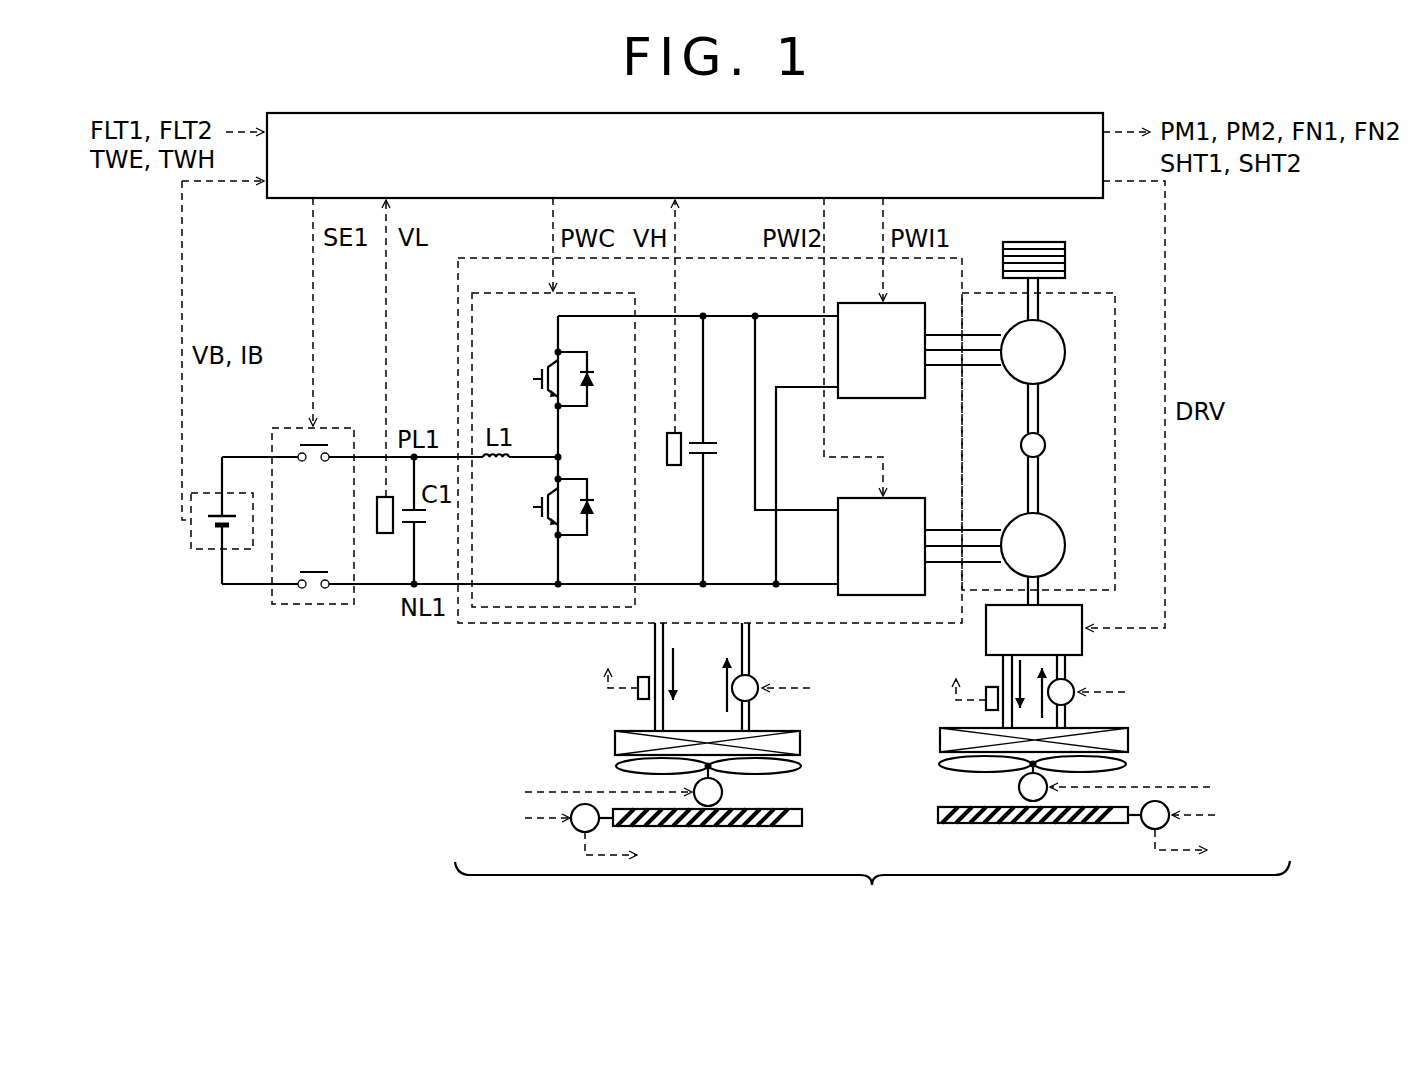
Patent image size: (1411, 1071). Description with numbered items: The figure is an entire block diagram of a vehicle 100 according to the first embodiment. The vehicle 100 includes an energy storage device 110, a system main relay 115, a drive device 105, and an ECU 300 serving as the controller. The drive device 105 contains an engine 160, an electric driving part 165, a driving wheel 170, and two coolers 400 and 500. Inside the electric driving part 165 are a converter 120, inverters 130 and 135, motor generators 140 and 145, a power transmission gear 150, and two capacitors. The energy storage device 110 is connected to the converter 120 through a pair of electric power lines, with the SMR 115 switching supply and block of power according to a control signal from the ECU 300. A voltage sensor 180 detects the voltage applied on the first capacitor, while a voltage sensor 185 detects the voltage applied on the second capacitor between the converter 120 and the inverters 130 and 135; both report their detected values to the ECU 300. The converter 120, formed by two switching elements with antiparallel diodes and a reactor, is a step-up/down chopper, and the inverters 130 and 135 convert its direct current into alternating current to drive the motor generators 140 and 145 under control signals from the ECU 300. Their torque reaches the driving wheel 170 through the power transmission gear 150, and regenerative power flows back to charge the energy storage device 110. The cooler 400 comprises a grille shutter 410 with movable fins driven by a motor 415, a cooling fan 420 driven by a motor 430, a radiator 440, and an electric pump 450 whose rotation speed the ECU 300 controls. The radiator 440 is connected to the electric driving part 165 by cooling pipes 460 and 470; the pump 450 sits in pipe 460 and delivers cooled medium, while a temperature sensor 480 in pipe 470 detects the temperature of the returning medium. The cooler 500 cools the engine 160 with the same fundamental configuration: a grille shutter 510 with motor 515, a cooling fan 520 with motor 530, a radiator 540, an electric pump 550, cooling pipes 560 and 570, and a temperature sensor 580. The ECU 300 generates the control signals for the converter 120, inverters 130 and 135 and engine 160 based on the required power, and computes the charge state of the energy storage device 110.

The vehicle 100 is at (1306, 250).
The drive device 105 is at (872, 887).
The energy storage device 110 is at (203, 550).
The system main relay 115 is at (341, 428).
The converter 120 is at (594, 293).
The inverter 130 is at (893, 303).
The inverter 135 is at (895, 498).
The motor generator 140 is at (1053, 328).
The motor generator 145 is at (1048, 522).
The power transmission gear 150 is at (1045, 445).
The engine 160 is at (1083, 614).
The electric driving part 165 is at (477, 258).
The driving wheel 170 is at (1058, 242).
The voltage sensor 180 is at (386, 533).
The voltage sensor 185 is at (674, 465).
The ECU 300 is at (283, 199).
The cooler 400 is at (552, 748).
The grille shutter 410 is at (770, 827).
The motor 415 is at (572, 830).
The cooling fan 420 is at (801, 766).
The motor 430 is at (722, 792).
The radiator 440 is at (801, 741).
The electric pump 450 is at (756, 680).
The cooling pipe 460 is at (749, 640).
The cooling pipe 470 is at (655, 715).
The temperature sensor 480 is at (636, 690).
The cooler 500 is at (1175, 718).
The grille shutter 510 is at (975, 824).
The motor 515 is at (1142, 828).
The cooling fan 520 is at (940, 764).
The motor 530 is at (1019, 787).
The radiator 540 is at (1128, 738).
The electric pump 550 is at (1071, 702).
The cooling pipe 560 is at (1066, 665).
The cooling pipe 570 is at (1003, 718).
The temperature sensor 580 is at (985, 704).